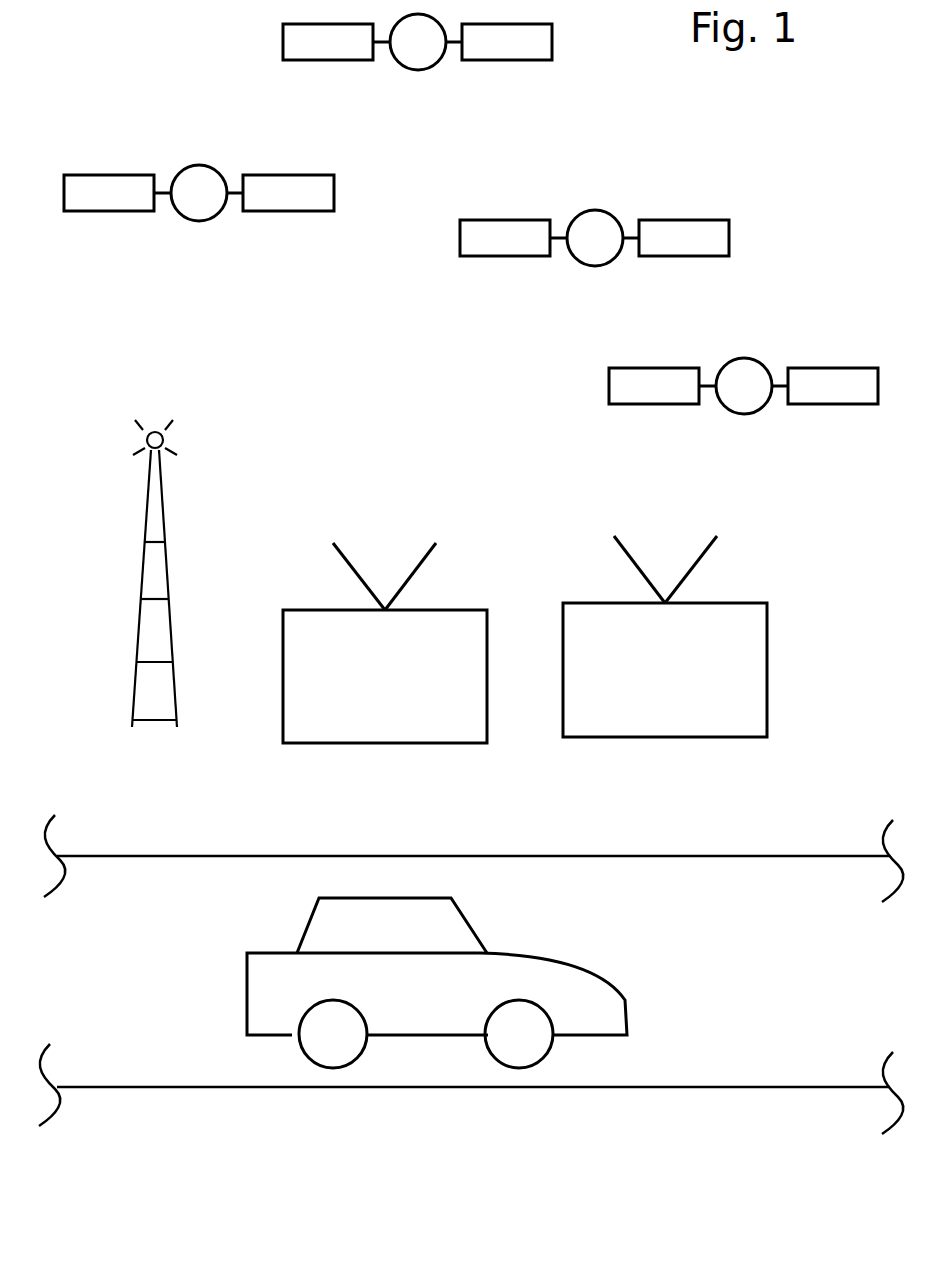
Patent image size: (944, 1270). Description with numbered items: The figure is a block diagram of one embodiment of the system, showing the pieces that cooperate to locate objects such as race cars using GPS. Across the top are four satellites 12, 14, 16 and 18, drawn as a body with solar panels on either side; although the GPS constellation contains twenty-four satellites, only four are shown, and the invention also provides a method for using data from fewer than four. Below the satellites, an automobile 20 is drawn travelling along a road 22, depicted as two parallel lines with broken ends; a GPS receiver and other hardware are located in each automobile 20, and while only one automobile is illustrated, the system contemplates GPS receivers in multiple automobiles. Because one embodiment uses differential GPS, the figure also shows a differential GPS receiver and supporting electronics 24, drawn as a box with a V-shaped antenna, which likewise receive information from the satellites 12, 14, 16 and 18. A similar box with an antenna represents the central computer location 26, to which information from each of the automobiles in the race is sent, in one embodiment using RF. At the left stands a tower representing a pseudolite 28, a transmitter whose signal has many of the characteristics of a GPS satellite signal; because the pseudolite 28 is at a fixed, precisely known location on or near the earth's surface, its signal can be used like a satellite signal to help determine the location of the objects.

The satellite 12 is at (213, 219).
The satellite 14 is at (432, 68).
The satellite 16 is at (609, 264).
The satellite 18 is at (758, 412).
The automobile 20 is at (543, 953).
The road 22 is at (702, 913).
The differential GPS receiver and supporting electronics 24 is at (737, 603).
The central computer location 26 is at (452, 610).
The pseudolite 28 is at (162, 525).